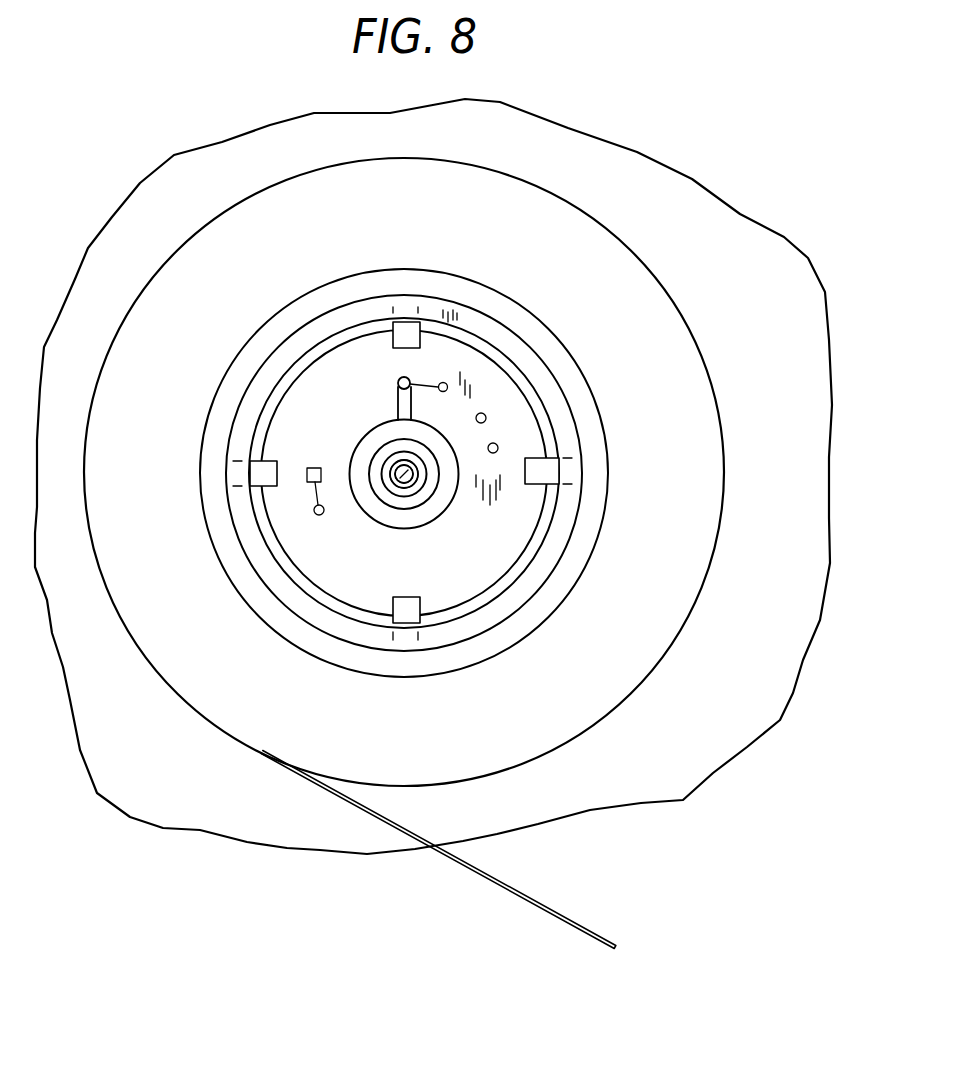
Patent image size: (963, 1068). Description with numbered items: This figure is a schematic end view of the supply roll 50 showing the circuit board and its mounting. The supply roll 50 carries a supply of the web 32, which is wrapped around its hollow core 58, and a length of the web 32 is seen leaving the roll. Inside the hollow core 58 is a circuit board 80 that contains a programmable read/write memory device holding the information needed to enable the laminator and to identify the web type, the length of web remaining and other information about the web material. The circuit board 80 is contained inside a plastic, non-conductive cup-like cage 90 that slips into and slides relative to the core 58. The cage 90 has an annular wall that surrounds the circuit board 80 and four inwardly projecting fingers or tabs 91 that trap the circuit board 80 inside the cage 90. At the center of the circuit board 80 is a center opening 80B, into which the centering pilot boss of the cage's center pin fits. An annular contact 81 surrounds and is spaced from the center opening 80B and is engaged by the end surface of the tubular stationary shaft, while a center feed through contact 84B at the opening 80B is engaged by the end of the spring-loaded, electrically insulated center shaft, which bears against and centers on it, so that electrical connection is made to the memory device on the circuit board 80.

The supply roll 50 is at (712, 337).
The hollow core 58 is at (532, 338).
The cage 90 is at (535, 572).
The circuit board 80 is at (517, 513).
The tabs 91 is at (379, 323).
The annular contact 81 is at (373, 442).
The center opening 80B is at (395, 485).
The center feed through contact 84B is at (418, 487).
The web 32 is at (495, 880).